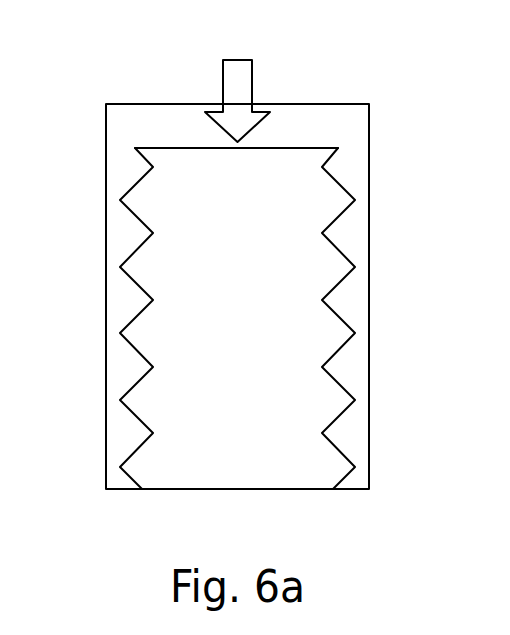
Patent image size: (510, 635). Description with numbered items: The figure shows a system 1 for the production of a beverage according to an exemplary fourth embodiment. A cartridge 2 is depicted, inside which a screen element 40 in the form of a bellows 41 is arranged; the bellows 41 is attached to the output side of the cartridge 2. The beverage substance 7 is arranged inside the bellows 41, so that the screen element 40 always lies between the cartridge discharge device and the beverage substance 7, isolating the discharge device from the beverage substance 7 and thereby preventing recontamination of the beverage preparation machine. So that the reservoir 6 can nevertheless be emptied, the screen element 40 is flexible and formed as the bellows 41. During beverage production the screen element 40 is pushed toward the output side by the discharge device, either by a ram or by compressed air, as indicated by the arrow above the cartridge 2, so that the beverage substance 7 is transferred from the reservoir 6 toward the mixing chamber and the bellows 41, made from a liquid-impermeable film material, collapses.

The system 1 is at (242, 284).
The cartridge 2 is at (369, 275).
The reservoir 6 is at (238, 318).
The beverage substance 7 is at (252, 452).
The screen element 40 is at (139, 314).
The bellows 41 is at (342, 383).